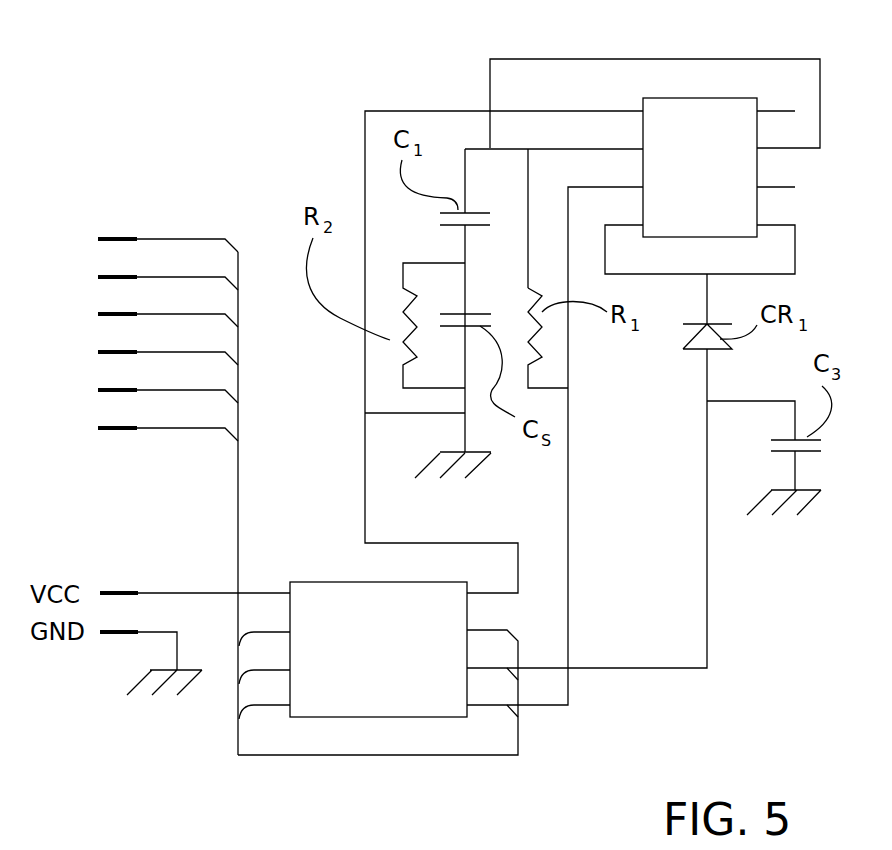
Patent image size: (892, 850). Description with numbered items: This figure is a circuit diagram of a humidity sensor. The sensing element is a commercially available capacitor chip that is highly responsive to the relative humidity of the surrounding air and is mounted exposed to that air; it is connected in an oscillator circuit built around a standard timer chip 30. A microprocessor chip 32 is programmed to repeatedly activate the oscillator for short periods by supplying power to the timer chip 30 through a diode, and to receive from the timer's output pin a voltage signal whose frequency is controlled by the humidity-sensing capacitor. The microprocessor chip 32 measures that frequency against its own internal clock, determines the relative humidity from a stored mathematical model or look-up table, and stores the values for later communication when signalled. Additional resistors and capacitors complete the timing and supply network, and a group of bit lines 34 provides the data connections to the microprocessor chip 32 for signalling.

The 555 timer chip 30 is at (693, 97).
The PIC12C671 microprocessor chip 32 is at (352, 580).
The input bit lines 34 is at (147, 227).